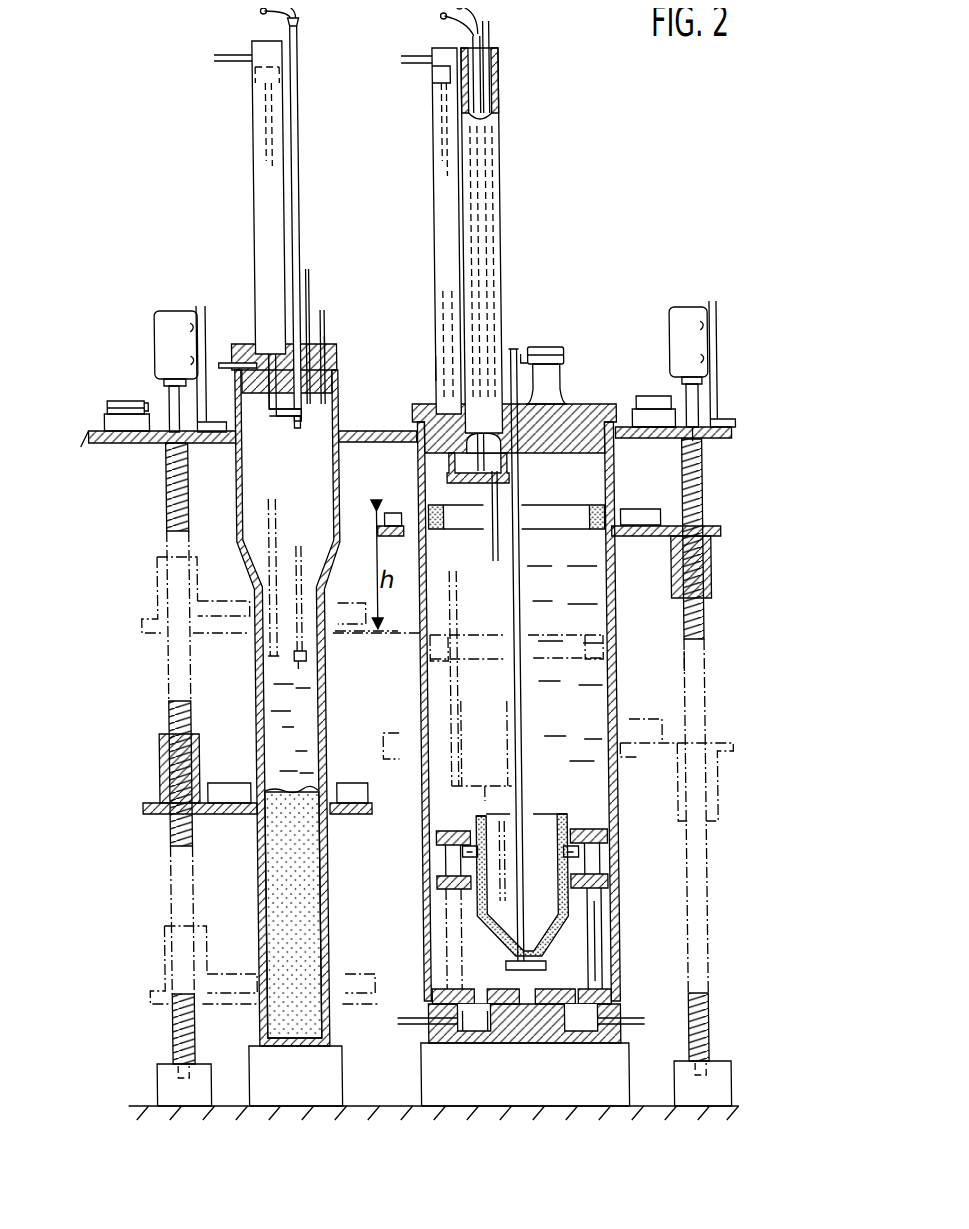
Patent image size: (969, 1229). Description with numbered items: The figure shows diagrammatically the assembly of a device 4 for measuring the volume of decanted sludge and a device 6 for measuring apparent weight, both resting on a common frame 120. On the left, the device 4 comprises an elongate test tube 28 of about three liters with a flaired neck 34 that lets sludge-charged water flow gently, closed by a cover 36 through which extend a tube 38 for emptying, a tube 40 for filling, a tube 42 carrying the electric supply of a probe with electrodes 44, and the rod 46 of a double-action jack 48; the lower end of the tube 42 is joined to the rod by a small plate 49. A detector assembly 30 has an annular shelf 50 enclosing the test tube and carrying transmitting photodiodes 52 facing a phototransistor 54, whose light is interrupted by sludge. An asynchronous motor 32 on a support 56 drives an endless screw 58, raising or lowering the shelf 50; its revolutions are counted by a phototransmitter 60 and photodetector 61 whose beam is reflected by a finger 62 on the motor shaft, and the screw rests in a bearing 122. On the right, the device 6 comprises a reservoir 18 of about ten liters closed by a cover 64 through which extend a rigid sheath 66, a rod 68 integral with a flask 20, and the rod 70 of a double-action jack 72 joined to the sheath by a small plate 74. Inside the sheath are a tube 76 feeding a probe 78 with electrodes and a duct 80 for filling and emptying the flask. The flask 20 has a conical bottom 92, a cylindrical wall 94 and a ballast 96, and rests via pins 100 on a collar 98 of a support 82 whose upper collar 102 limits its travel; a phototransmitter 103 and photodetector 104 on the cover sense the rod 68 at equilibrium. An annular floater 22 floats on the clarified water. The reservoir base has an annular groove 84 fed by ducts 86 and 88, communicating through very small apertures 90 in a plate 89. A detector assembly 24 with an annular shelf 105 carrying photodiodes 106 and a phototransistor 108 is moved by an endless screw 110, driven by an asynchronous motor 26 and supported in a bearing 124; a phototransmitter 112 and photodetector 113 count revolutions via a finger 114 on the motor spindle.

The device for measuring the volume 4 is at (162, 672).
The device for measuring the weight 6 is at (722, 786).
The reservoir 18 is at (618, 668).
The flask 20 is at (582, 856).
The annular floater 22 is at (592, 540).
The detector assembly 24 is at (714, 565).
The asynchronous motor 26 is at (693, 310).
The test tube 28 is at (257, 893).
The detector assembly 30 is at (160, 772).
The asynchronous motor 32 is at (180, 311).
The flaired neck 34 is at (246, 578).
The cover 36 is at (333, 346).
The tube for emptying the test tube 38 is at (314, 270).
The tube for filling the test tube 40 is at (328, 310).
The tube 42 is at (308, 90).
The probe with electrodes 44 is at (294, 434).
The rod 46 is at (262, 300).
The double-action jack 48 is at (262, 100).
The small plate 49 is at (306, 421).
The annular shelf 50 is at (150, 813).
The transmitting photodiode 52 is at (228, 782).
The phototransistor 54 is at (352, 782).
The support 56 is at (114, 443).
The endless screw 58 is at (176, 530).
The phototransmitter 60 is at (120, 414).
The photodetector 61 is at (140, 400).
The optically reflecting finger 62 is at (168, 400).
The cover 64 is at (582, 434).
The rigid sheath 66 is at (508, 205).
The rod 68 is at (519, 348).
The rod 70 is at (442, 368).
The double-action jack 72 is at (441, 164).
The small plate 74 is at (451, 475).
The tube 76 is at (490, 72).
The probe 78 is at (484, 498).
The duct 80 is at (500, 96).
The support 82 is at (600, 915).
The annular groove 84 is at (578, 1030).
The duct 86 is at (642, 1023).
The duct 88 is at (408, 1023).
The plate 89 is at (610, 1000).
The apertures 90 is at (568, 1004).
The conical bottom 92 is at (546, 962).
The cylindrical wall 94 is at (562, 814).
The ballast 96 is at (440, 896).
The collar 98 is at (440, 888).
The pins 100 is at (436, 881).
The collar 102 is at (436, 838).
The phototransmitter 103 is at (562, 372).
The photodetector 104 is at (554, 352).
The annular shelf 105 is at (630, 535).
The emitting photodiode 106 is at (650, 508).
The phototransistor 108 is at (396, 512).
The endless screw 110 is at (700, 645).
The phototransmitter 112 is at (643, 422).
The photodetector 113 is at (645, 410).
The finger 114 is at (698, 440).
The common frame 120 is at (356, 1103).
The bearing 122 is at (160, 1070).
The bearing 124 is at (718, 1060).